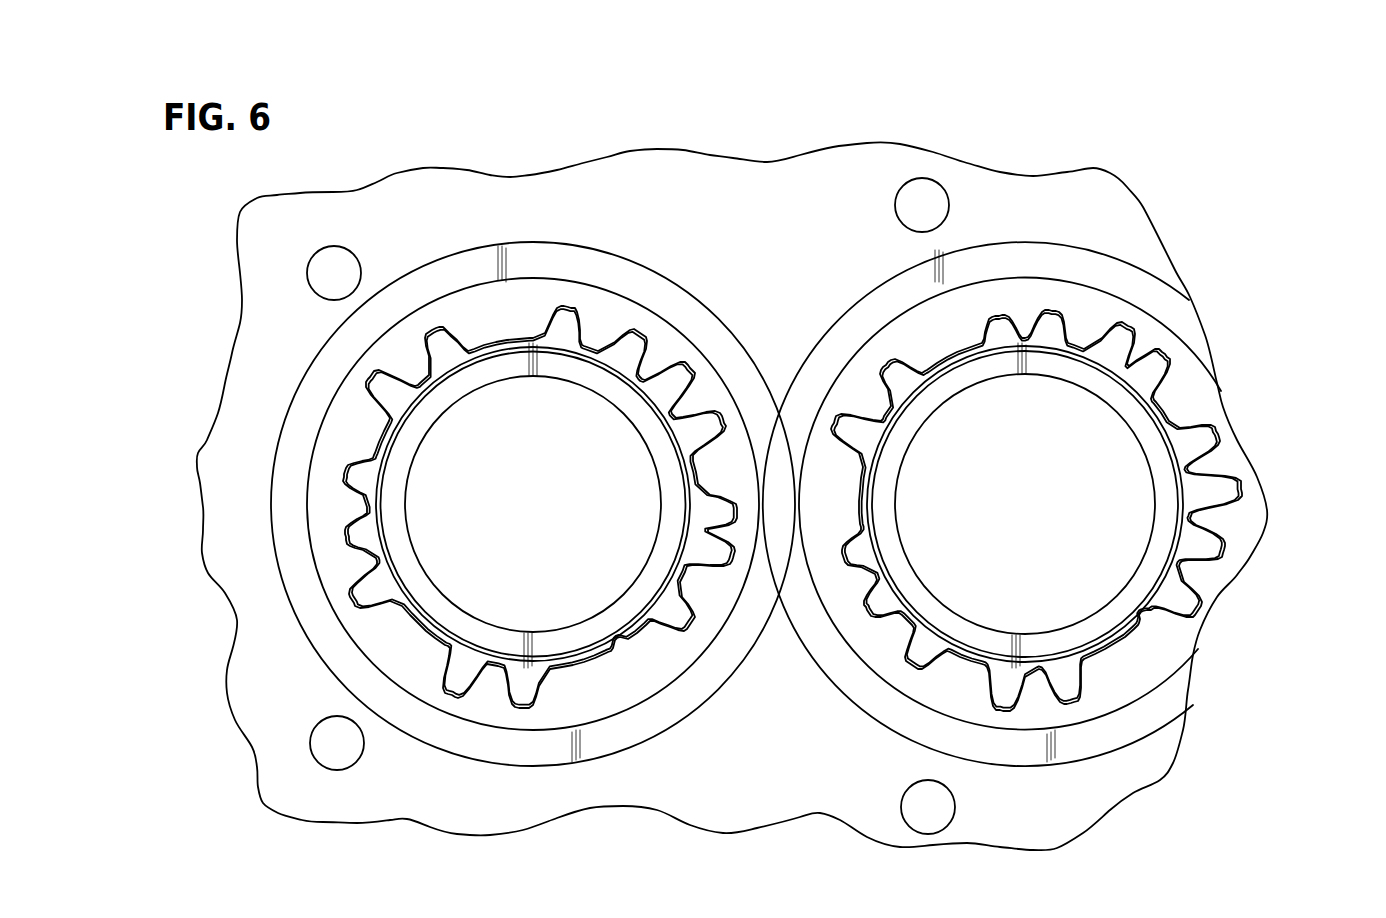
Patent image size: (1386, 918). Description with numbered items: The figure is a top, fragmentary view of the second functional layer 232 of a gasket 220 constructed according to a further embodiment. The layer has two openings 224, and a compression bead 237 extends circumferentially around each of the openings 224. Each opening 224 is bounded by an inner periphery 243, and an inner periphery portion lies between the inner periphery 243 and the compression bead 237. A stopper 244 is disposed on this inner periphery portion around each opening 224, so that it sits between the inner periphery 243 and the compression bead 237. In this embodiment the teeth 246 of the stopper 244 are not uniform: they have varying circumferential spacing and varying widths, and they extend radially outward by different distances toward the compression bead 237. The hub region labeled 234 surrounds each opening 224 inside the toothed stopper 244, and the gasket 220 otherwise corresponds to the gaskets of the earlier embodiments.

The gasket 220 is at (962, 103).
The second functional layer 232 is at (851, 180).
The compression beads 237 is at (438, 278).
The inner peripheries 243 is at (680, 650).
The openings 224 is at (544, 505).
The teeth 246 is at (698, 375).
The stopper 244 is at (588, 678).
The gear hub 234 is at (436, 590).